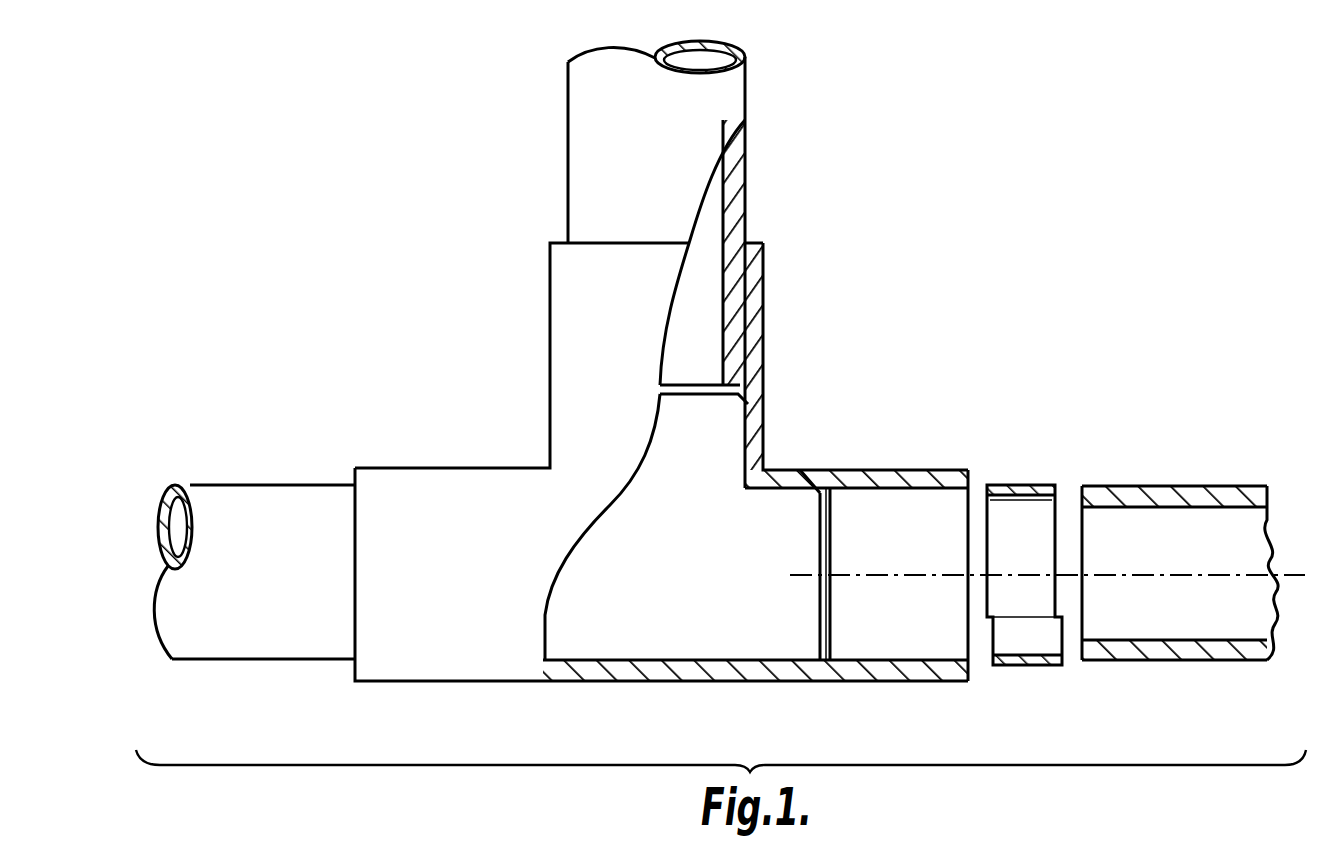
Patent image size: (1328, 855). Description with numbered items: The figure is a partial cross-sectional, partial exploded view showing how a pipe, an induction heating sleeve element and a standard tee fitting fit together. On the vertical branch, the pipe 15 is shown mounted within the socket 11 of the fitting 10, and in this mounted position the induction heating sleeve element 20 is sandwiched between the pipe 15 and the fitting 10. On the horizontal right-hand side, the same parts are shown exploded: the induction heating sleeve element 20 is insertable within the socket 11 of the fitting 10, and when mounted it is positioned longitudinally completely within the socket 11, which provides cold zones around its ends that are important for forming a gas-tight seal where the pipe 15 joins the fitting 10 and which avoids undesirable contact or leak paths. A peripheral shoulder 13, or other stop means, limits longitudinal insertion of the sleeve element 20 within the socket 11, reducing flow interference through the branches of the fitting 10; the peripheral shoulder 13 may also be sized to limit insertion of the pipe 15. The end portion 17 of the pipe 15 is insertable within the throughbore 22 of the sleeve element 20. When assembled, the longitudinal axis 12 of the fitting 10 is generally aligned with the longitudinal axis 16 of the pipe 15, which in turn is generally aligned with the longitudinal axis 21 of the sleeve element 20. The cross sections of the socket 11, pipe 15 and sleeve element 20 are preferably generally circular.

The fitting 10 is at (413, 207).
The socket 11 is at (888, 510).
The longitudinal axis 12 is at (867, 576).
The peripheral shoulder 13 is at (792, 485).
The pipe 15 is at (745, 175).
The longitudinal axis 16 is at (1130, 578).
The end portion 17 is at (1072, 498).
The induction heating sleeve element 20 is at (765, 300).
The longitudinal axis 21 is at (1007, 578).
The throughbore 22 is at (1040, 552).